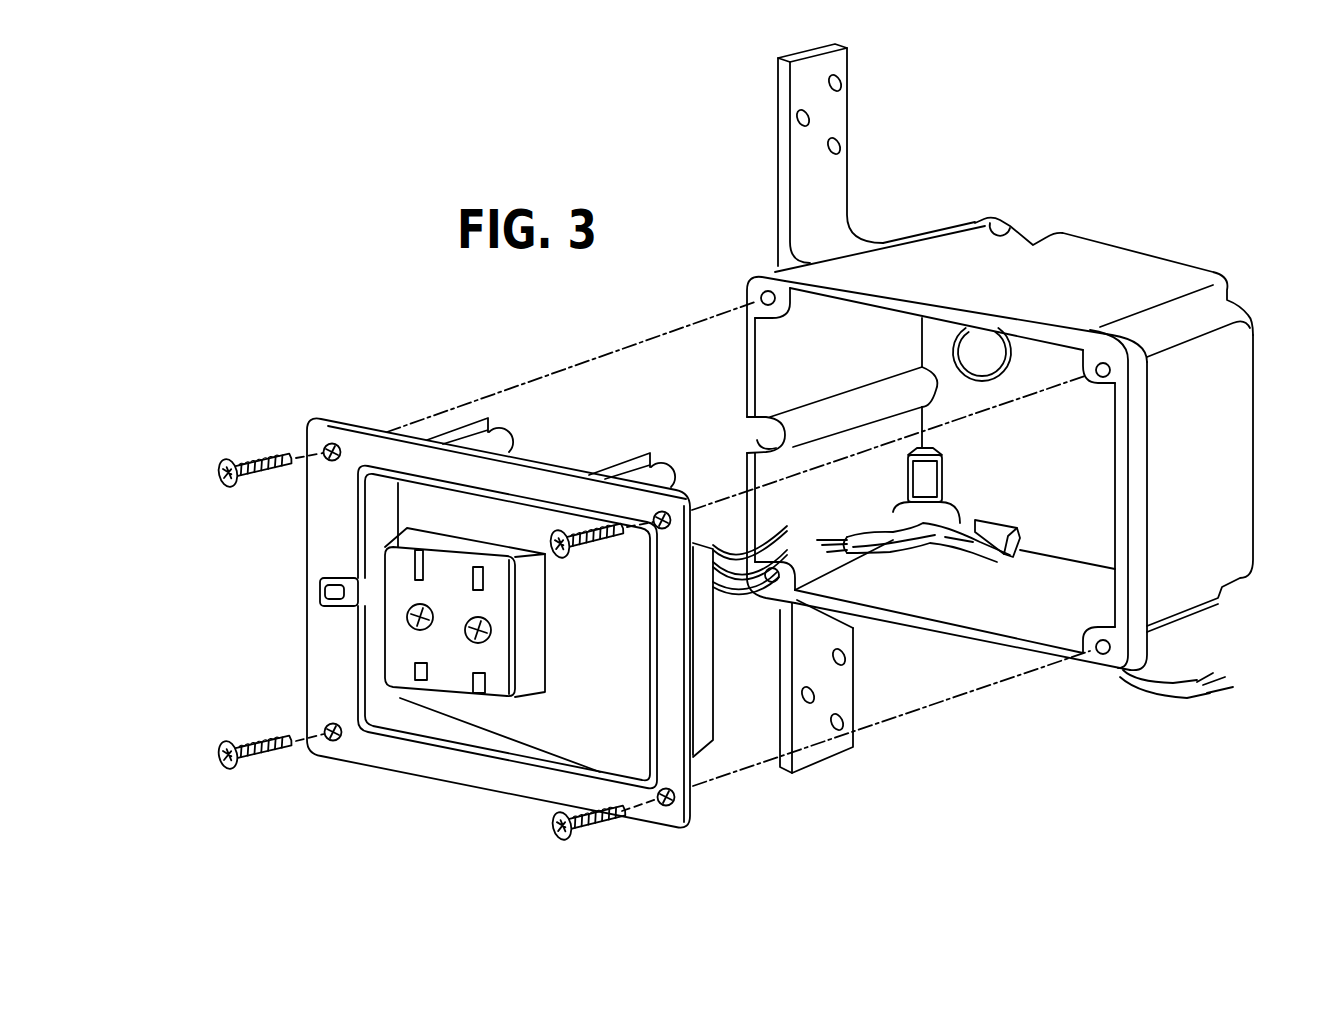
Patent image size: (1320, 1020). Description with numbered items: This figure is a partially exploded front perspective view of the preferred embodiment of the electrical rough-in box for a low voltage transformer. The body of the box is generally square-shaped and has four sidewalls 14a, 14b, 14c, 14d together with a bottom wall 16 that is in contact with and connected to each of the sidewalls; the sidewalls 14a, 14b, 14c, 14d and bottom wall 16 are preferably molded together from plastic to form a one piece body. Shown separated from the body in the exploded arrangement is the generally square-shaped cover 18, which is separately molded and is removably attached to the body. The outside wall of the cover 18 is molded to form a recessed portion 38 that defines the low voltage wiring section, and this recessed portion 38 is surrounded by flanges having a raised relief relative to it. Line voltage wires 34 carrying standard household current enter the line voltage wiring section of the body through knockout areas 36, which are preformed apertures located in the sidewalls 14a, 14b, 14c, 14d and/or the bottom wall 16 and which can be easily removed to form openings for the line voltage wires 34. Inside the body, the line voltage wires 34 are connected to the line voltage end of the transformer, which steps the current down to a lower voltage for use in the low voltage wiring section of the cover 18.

The sidewall 14a is at (788, 375).
The sidewall 14b is at (1013, 288).
The sidewall 14c is at (1165, 441).
The sidewall 14d is at (1000, 615).
The bottom wall 16 is at (1053, 502).
The cover 18 is at (300, 611).
The line voltage wires 34 is at (895, 550).
The knockout areas 36 is at (953, 343).
The recessed portion 38 is at (610, 637).